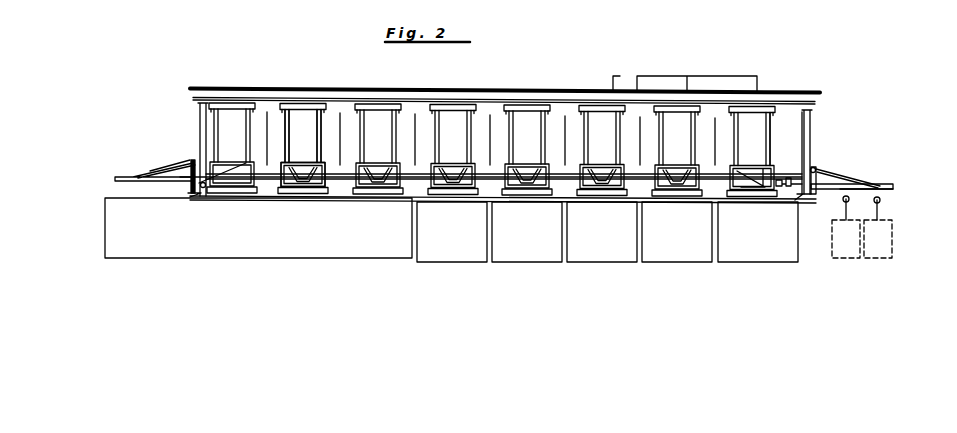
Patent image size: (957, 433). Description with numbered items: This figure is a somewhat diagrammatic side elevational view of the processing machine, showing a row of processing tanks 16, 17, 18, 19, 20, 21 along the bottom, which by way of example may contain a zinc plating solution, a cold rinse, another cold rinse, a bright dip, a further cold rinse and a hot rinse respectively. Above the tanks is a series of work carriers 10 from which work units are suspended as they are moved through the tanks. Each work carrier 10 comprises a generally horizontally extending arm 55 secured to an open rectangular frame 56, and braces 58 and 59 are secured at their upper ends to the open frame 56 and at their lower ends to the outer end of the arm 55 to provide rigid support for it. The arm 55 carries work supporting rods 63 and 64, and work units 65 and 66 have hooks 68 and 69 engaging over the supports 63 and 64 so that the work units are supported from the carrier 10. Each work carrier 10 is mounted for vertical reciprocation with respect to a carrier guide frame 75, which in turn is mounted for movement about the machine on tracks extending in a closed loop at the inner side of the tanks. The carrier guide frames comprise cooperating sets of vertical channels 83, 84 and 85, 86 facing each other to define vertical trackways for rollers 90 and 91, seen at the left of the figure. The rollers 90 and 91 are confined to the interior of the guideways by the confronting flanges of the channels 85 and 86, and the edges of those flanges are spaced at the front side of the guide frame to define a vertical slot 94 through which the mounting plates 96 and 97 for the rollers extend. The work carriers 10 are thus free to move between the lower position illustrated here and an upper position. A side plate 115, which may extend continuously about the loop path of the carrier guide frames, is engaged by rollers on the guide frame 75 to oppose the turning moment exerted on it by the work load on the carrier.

The work carrier 10 is at (833, 174).
The processing tank 16 is at (298, 259).
The processing tank 17 is at (446, 263).
The processing tank 18 is at (521, 263).
The processing tank 19 is at (596, 263).
The processing tank 20 is at (672, 263).
The processing tank 21 is at (746, 263).
The arm 55 is at (866, 186).
The open rectangular frame 56 is at (770, 176).
The brace 58 is at (658, 174).
The brace 59 is at (131, 173).
The work supporting rod 63 is at (845, 204).
The work supporting rod 64 is at (880, 203).
The work unit 65 is at (838, 260).
The work unit 66 is at (893, 258).
The hook 68 is at (843, 200).
The hook 69 is at (880, 201).
The carrier guide frame 75 is at (782, 134).
The vertical channel 83 is at (286, 122).
The vertical channel 84 is at (293, 120).
The vertical channel 85 is at (326, 122).
The vertical channel 86 is at (199, 123).
The roller 90 is at (201, 158).
The roller 91 is at (194, 197).
The vertical slot 94 is at (318, 151).
The mounting plate 96 is at (182, 168).
The mounting plate 97 is at (192, 191).
The side plate 115 is at (213, 90).